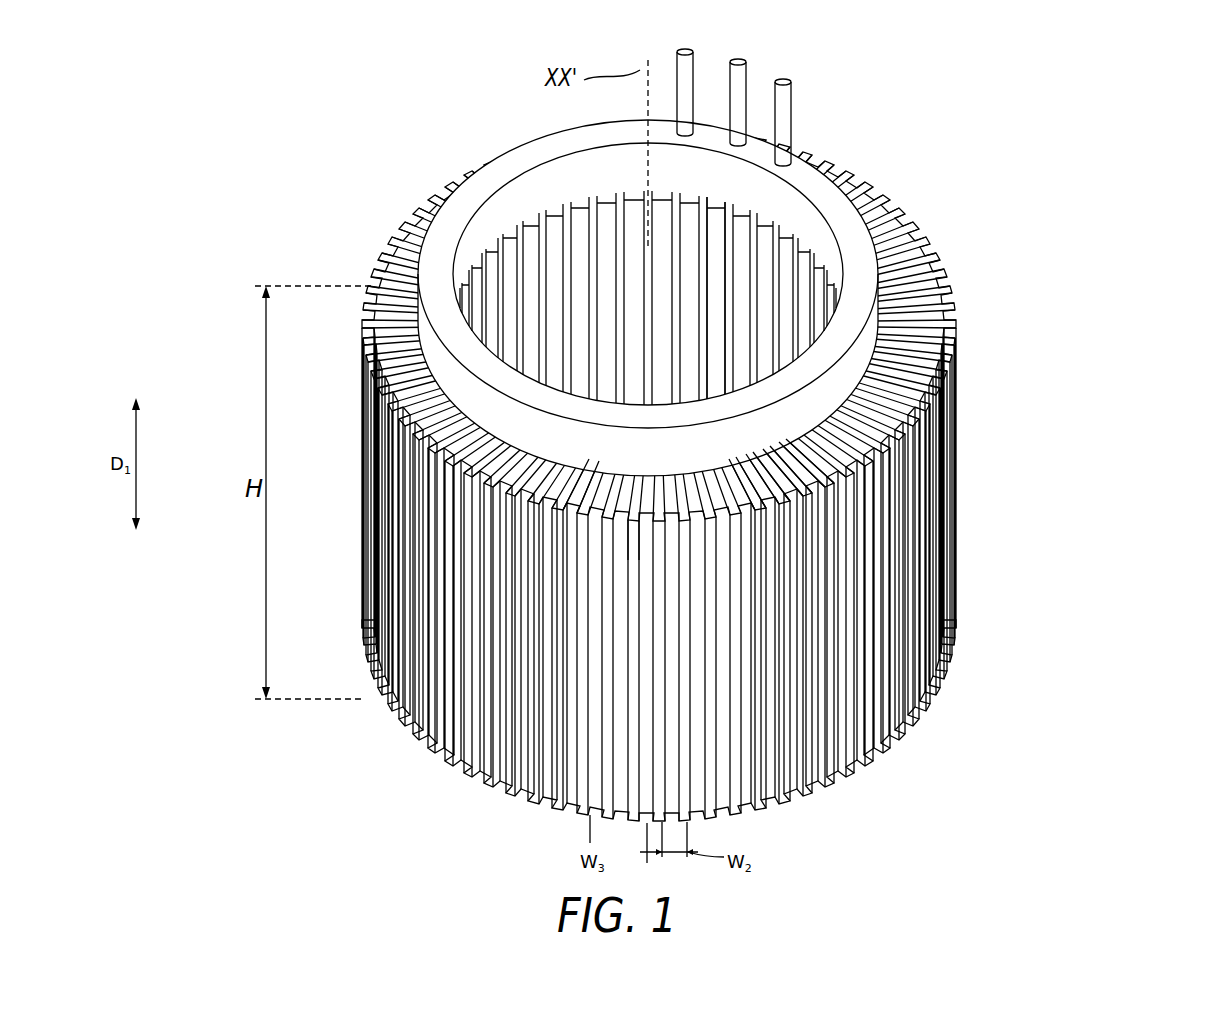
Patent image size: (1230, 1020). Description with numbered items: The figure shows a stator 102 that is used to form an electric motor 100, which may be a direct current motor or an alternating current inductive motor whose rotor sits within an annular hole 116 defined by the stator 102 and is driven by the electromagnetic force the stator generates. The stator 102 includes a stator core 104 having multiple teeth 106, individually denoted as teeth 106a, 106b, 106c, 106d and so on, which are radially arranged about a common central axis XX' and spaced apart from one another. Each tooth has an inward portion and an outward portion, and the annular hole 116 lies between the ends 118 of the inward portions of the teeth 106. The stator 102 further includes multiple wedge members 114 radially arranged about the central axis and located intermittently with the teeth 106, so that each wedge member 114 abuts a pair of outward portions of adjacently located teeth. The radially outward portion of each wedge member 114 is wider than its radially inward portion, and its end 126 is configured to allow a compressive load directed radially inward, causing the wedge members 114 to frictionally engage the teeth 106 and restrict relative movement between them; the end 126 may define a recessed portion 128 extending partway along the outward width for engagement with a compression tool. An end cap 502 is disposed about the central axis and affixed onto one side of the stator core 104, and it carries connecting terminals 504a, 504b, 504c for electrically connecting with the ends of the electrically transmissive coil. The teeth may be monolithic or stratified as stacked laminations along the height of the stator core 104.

The electric motor 100 is at (1100, 84).
The stator 102 is at (1032, 182).
The stator core 104 is at (916, 315).
The teeth 106 is at (707, 510).
The tooth 106a is at (722, 507).
The tooth 106b is at (738, 503).
The tooth 106c is at (758, 498).
The tooth 106d is at (776, 492).
The wedge members 114 is at (913, 254).
The annular hole 116 is at (722, 282).
The ends 118 is at (836, 246).
The end 126 is at (590, 492).
The recessed portion 128 is at (633, 562).
The end cap 502 is at (466, 208).
The connecting terminal 504a is at (694, 66).
The connecting terminal 504b is at (745, 75).
The connecting terminal 504c is at (790, 95).